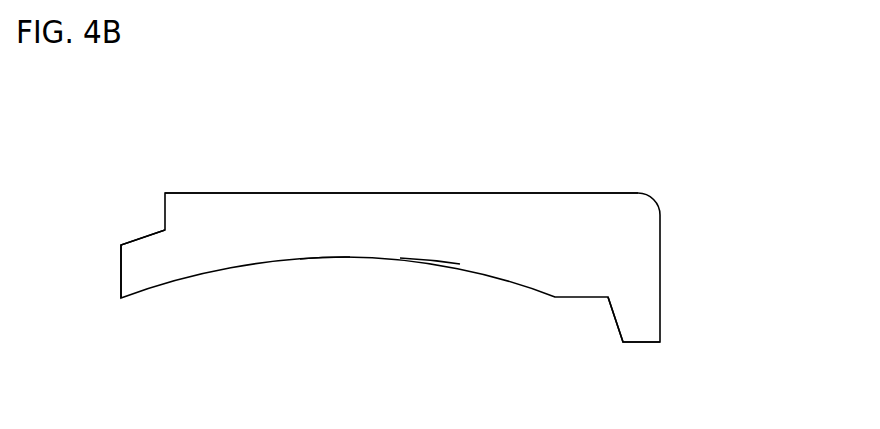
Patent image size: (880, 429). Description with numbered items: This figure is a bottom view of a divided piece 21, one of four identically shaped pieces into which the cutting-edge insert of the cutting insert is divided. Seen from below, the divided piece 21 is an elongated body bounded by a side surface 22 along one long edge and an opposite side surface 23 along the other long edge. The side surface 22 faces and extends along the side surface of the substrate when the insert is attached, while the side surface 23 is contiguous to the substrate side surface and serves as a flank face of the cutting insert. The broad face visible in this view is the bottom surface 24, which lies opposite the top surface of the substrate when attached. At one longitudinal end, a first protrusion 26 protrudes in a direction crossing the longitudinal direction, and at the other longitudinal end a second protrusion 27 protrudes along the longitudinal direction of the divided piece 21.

The divided piece 21 is at (681, 106).
The side surface 22 is at (350, 260).
The side surface 23 is at (402, 192).
The bottom surface 24 is at (435, 238).
The first protrusion 26 is at (638, 322).
The second protrusion 27 is at (143, 283).